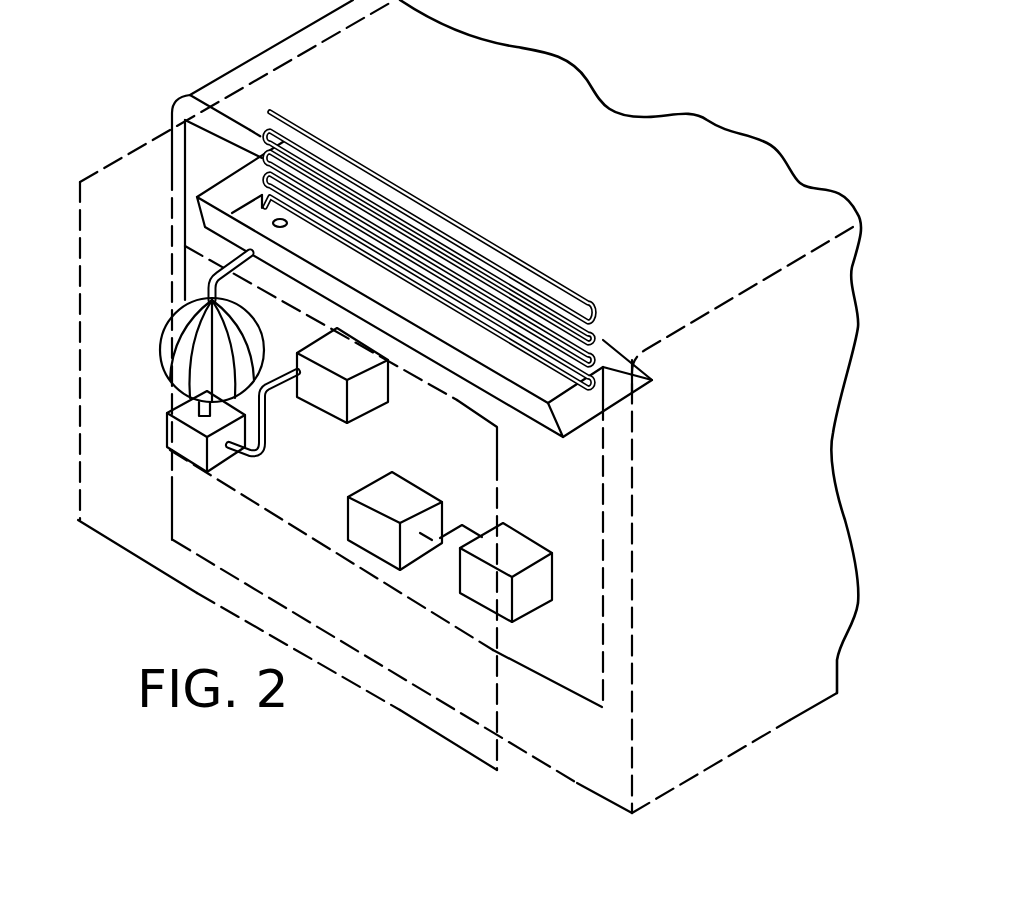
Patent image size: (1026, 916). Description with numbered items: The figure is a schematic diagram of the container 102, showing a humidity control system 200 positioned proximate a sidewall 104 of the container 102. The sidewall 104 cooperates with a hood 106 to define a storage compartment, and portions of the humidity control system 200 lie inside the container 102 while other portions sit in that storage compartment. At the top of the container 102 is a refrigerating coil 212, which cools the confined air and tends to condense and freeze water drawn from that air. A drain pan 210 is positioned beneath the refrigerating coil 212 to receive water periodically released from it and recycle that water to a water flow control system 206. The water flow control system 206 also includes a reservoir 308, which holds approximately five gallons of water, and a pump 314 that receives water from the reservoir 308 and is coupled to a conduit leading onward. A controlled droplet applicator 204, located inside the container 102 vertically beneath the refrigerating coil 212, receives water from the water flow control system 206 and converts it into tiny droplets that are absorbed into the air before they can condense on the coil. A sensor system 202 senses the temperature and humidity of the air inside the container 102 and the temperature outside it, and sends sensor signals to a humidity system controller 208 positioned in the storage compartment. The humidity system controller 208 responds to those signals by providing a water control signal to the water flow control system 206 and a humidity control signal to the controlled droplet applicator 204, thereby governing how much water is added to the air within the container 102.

The container 102 is at (770, 272).
The sidewall 104 is at (595, 790).
The hood 106 is at (453, 753).
The humidity control system 200 is at (283, 570).
The sensor system 202 is at (540, 590).
The controlled droplet applicator 204 is at (323, 402).
The water flow control system 206 is at (137, 387).
The humidity system controller 208 is at (385, 550).
The drain pan 210 is at (555, 422).
The refrigerating coil 212 is at (415, 208).
The reservoir 308 is at (166, 335).
The pump 314 is at (198, 462).